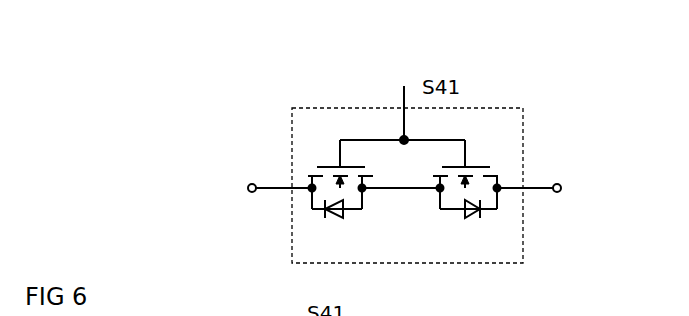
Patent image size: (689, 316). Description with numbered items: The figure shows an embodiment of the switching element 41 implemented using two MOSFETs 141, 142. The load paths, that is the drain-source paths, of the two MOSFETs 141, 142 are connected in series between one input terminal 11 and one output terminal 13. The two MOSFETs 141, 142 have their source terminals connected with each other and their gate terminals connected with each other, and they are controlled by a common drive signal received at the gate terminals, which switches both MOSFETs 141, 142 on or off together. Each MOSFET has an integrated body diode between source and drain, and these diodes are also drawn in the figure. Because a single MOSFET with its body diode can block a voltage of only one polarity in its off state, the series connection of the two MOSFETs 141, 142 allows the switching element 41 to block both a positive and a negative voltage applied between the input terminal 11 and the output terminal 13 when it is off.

The input terminal 11 is at (251, 182).
The output terminal 13 is at (561, 181).
The MOSFET 141 is at (322, 160).
The MOSFET 142 is at (480, 160).
The switching element 41 is at (497, 108).